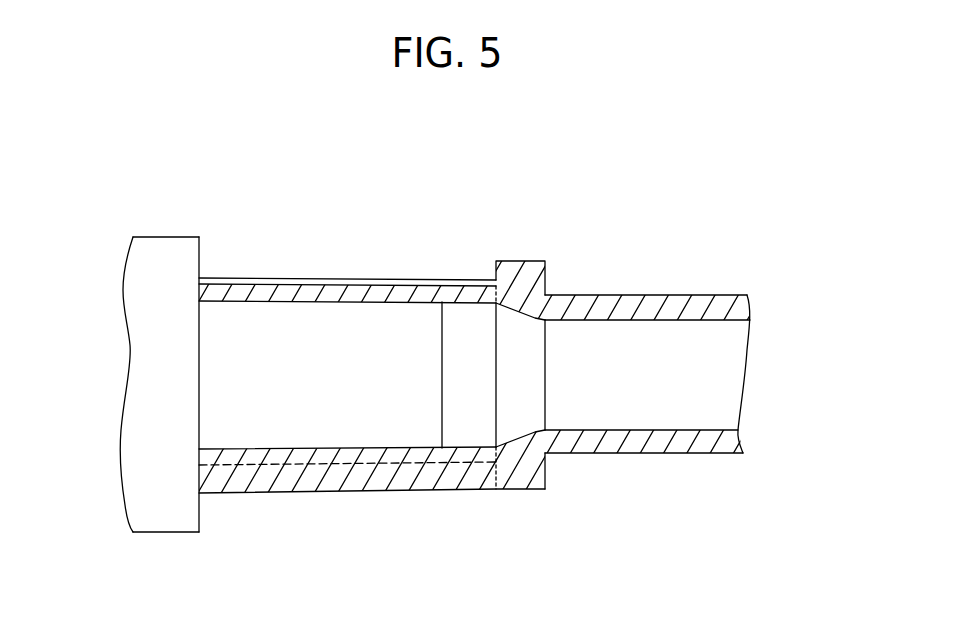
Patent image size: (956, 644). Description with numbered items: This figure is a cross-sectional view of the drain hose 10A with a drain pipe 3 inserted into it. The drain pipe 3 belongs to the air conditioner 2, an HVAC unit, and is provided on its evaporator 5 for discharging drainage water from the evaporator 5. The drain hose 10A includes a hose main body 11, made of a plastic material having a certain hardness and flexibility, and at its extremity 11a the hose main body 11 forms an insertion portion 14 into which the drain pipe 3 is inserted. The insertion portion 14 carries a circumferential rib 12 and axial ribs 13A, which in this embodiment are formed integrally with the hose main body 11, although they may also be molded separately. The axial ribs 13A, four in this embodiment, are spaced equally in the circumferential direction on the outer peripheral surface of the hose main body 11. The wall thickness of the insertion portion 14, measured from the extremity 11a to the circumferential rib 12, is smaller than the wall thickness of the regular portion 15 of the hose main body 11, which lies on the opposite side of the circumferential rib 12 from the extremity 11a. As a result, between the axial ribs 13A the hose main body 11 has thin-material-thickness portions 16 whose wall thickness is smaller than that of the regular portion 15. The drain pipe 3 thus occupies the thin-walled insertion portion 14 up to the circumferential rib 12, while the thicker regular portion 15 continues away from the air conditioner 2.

The air conditioner 2 is at (167, 225).
The drain pipe 3 is at (283, 313).
The evaporator 5 is at (170, 522).
The drain hose 10A is at (718, 278).
The hose main body 11 is at (717, 457).
The extremity 11a is at (200, 285).
The circumferential rib 12 is at (532, 272).
The axial ribs 13A is at (388, 290).
The insertion portion 14 is at (535, 493).
The regular portion 15 is at (658, 447).
The thin-material-thickness portions 16 is at (320, 457).